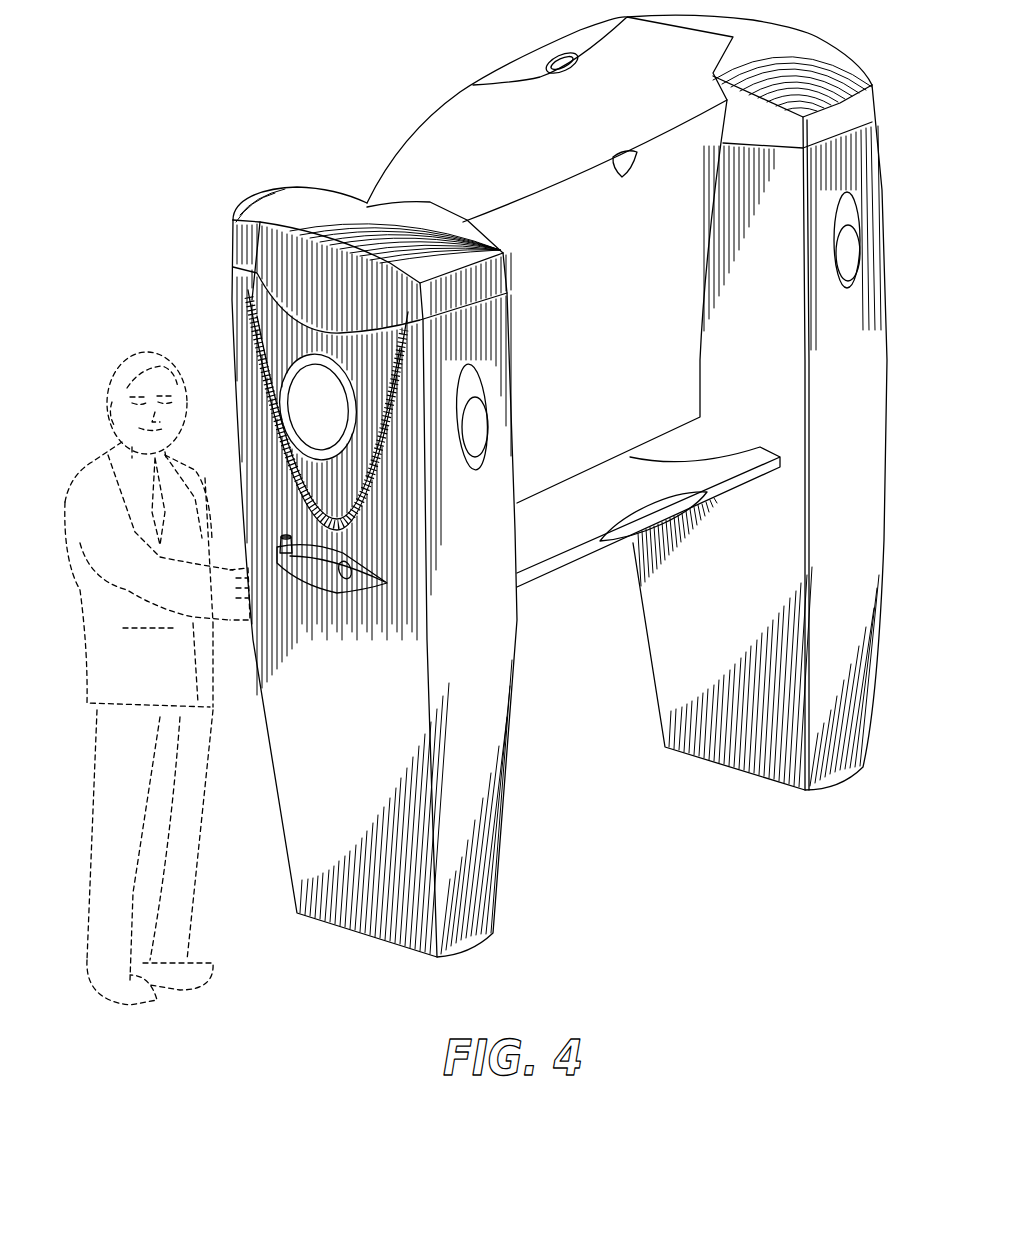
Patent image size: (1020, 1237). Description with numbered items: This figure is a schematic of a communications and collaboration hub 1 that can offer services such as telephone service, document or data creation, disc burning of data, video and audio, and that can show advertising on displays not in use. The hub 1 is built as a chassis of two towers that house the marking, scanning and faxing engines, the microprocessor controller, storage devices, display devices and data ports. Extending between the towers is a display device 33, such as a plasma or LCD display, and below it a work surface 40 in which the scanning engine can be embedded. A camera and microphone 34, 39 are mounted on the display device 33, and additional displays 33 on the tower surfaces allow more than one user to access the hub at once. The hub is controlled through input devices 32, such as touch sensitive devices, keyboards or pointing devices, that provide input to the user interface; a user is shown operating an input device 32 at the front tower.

The communications and/or collaboration hub 1 is at (537, 482).
The input devices 32 is at (345, 574).
The display panel 33 is at (298, 393).
The opening 34 is at (640, 137).
The sensor 39 is at (623, 157).
The shelf 40 is at (720, 473).